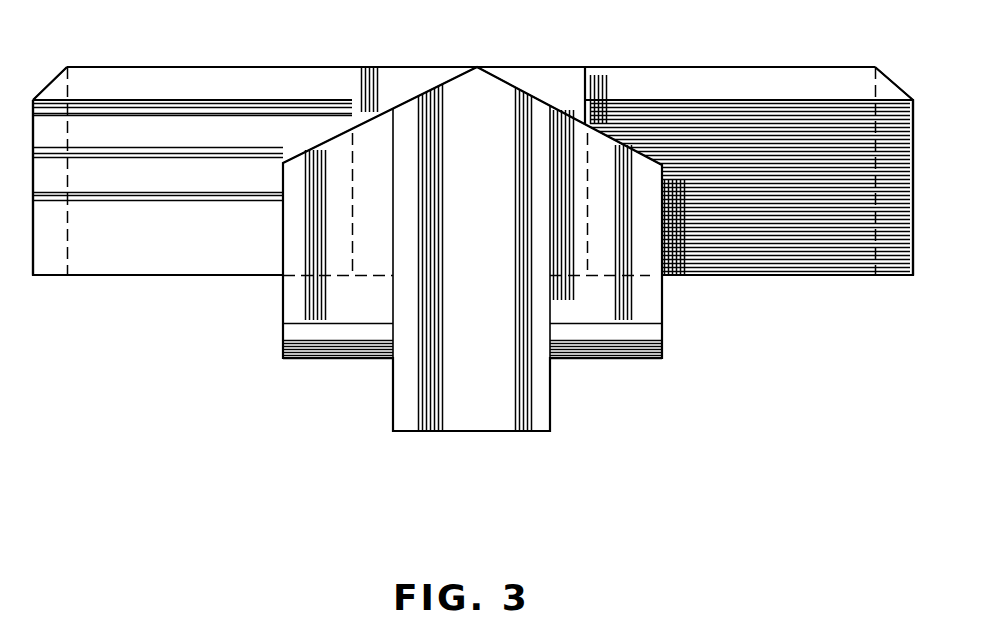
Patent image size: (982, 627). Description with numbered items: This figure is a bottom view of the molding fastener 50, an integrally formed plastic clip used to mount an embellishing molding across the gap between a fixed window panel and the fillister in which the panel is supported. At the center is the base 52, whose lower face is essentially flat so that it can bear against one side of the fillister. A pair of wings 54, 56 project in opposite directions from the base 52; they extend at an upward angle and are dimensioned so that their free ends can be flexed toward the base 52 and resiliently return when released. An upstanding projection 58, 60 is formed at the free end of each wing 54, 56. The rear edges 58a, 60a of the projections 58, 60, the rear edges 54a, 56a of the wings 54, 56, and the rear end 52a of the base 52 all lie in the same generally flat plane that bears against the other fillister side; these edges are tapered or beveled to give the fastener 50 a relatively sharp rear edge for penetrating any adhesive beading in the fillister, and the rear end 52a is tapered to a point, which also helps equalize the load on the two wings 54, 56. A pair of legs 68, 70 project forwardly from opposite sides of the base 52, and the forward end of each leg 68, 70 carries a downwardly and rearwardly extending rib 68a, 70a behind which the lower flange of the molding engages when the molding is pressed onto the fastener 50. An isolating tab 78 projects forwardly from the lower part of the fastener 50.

The molding fastener 50 is at (477, 262).
The base 52 is at (485, 191).
The rear end of the base 52a is at (472, 78).
The wing 54 is at (183, 257).
The rear edge of the wing 54a is at (235, 67).
The wing 56 is at (778, 255).
The rear edge of the wing 56a is at (643, 67).
The upstanding projection 58 is at (33, 250).
The rear edge of the projection 58a is at (67, 66).
The upstanding projection 60 is at (913, 147).
The rear edge of the projection 60a is at (878, 67).
The leg 68 is at (305, 247).
The rib 68a is at (312, 352).
The leg 70 is at (592, 309).
The rib 70a is at (597, 350).
The isolating tab 78 is at (480, 418).